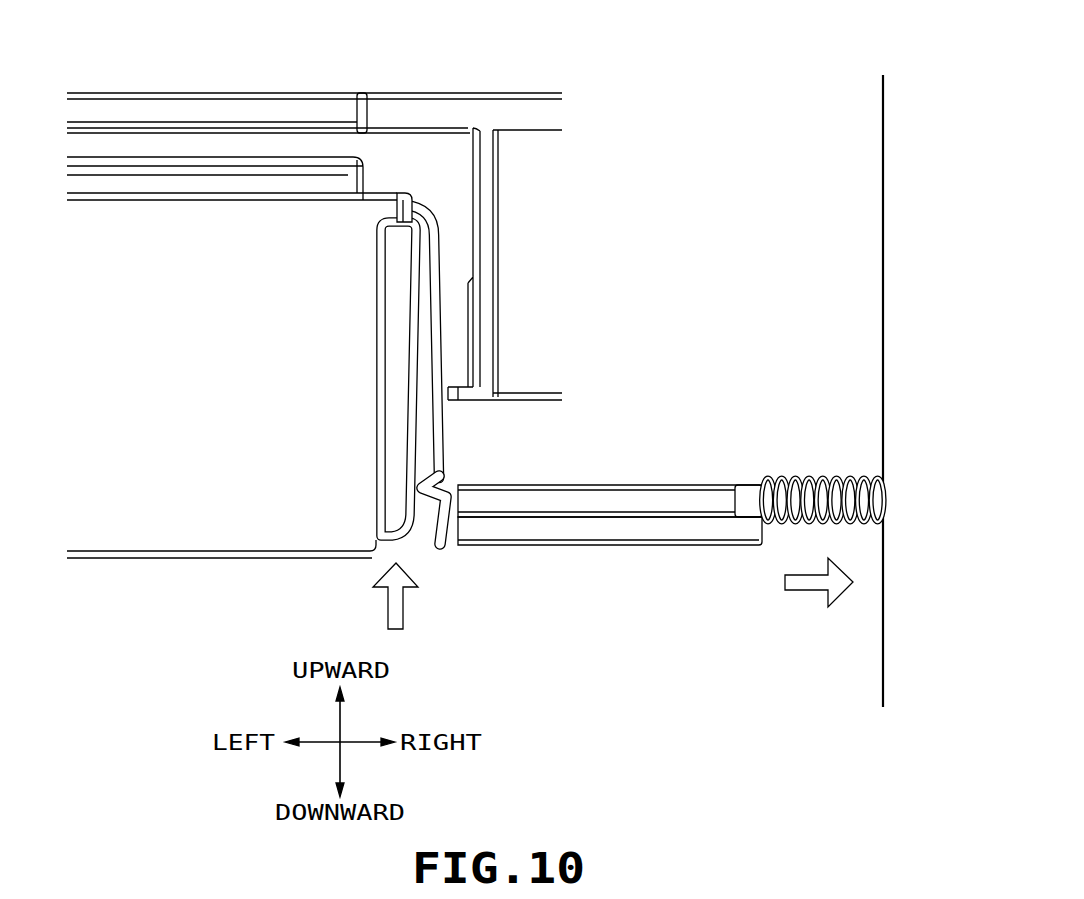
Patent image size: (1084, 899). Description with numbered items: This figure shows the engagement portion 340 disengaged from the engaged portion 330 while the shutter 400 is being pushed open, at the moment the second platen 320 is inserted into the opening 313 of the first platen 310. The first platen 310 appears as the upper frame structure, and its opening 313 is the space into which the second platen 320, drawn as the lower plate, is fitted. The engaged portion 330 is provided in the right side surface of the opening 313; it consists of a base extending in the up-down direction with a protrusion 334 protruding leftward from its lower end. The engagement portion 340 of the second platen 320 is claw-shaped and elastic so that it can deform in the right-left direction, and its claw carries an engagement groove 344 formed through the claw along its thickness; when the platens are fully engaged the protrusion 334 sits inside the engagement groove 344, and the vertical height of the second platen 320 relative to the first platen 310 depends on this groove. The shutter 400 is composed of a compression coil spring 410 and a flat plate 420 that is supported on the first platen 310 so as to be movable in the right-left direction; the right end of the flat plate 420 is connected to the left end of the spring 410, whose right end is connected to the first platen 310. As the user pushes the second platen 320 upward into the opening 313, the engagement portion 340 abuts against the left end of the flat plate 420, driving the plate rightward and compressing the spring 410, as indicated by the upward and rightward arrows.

The first platen 310 is at (413, 118).
The opening 313 is at (460, 167).
The second platen 320 is at (242, 525).
The engaged portion 330 is at (483, 315).
The protrusion 334 is at (463, 390).
The engagement portion 340 is at (435, 215).
The engagement groove 344 is at (440, 462).
The shutter 400 is at (728, 545).
The compression coil spring 410 is at (790, 477).
The flat plate 420 is at (545, 540).